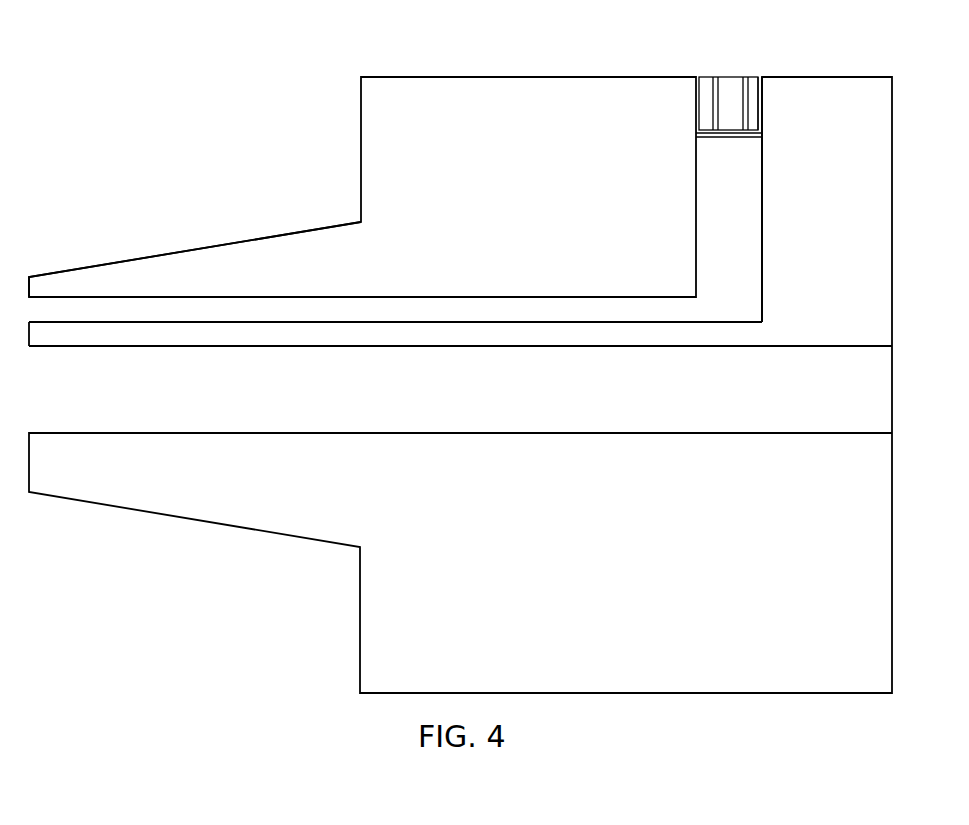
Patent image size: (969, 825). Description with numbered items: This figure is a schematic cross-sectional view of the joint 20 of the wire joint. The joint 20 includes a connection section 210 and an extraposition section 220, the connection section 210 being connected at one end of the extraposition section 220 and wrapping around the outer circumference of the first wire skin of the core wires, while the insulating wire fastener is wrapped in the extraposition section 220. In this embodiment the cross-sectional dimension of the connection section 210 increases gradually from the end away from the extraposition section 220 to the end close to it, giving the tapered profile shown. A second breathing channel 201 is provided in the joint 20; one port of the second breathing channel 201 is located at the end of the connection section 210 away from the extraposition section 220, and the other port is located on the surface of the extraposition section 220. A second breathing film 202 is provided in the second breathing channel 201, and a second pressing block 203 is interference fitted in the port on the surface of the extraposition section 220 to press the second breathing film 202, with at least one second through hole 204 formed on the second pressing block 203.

The joint 20 is at (363, 79).
The extraposition section 220 is at (553, 77).
The connection section 210 is at (237, 242).
The second breathing channel 201 is at (451, 311).
The second breathing film 202 is at (733, 138).
The second pressing block 203 is at (756, 75).
The second through hole 204 is at (716, 84).